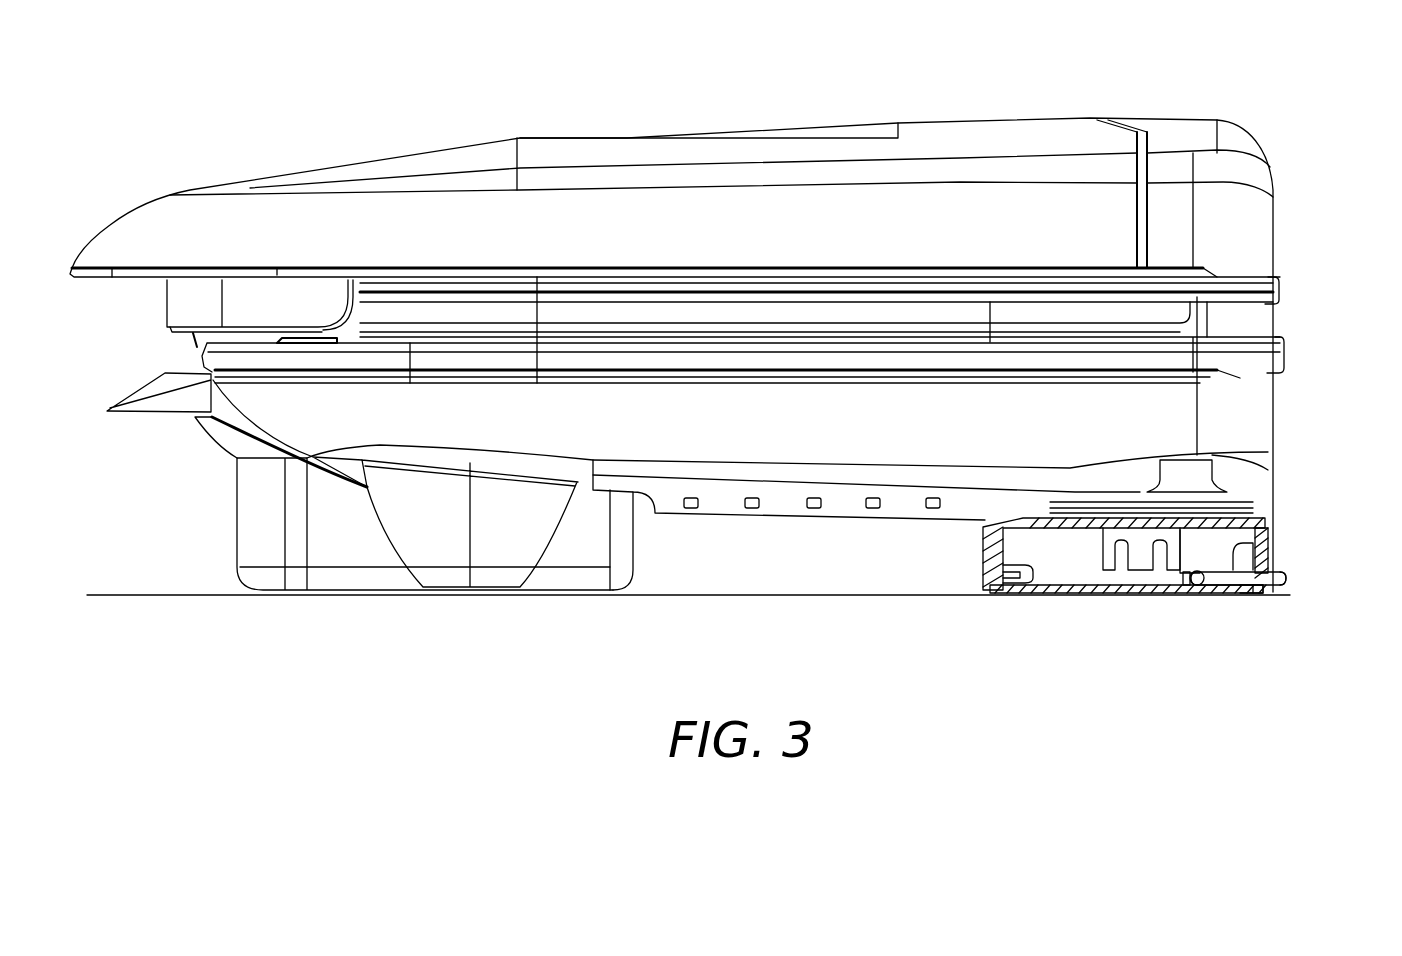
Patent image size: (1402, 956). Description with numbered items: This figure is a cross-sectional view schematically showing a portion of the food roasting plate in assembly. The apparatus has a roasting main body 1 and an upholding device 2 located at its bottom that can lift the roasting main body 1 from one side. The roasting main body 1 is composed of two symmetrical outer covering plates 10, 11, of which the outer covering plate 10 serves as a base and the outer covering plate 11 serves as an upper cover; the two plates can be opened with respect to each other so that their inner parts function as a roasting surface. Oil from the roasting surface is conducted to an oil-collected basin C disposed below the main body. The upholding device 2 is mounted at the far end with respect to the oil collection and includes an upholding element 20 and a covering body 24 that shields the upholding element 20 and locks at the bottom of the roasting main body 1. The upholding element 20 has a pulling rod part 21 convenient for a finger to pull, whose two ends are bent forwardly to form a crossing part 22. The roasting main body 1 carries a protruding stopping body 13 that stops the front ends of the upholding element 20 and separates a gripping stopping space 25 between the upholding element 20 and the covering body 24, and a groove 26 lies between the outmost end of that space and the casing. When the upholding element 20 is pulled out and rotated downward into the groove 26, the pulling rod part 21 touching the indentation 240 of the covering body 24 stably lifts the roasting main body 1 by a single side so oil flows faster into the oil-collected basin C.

The roasting main body 1 is at (1158, 108).
The outer covering plate 10 is at (927, 133).
The outer covering plate 11 is at (920, 470).
The oil-collected basin C is at (298, 547).
The covering body 24 is at (1060, 592).
The upholding device 2 is at (1223, 608).
The gripping stopping space 25 is at (1213, 585).
The protruding stopping body 13 is at (1188, 562).
The groove 26 is at (1250, 548).
The pulling rod part 21 is at (1262, 573).
The upholding element 20 is at (1290, 582).
The crossing part 22 is at (1265, 592).
The indentation 240 is at (1258, 596).